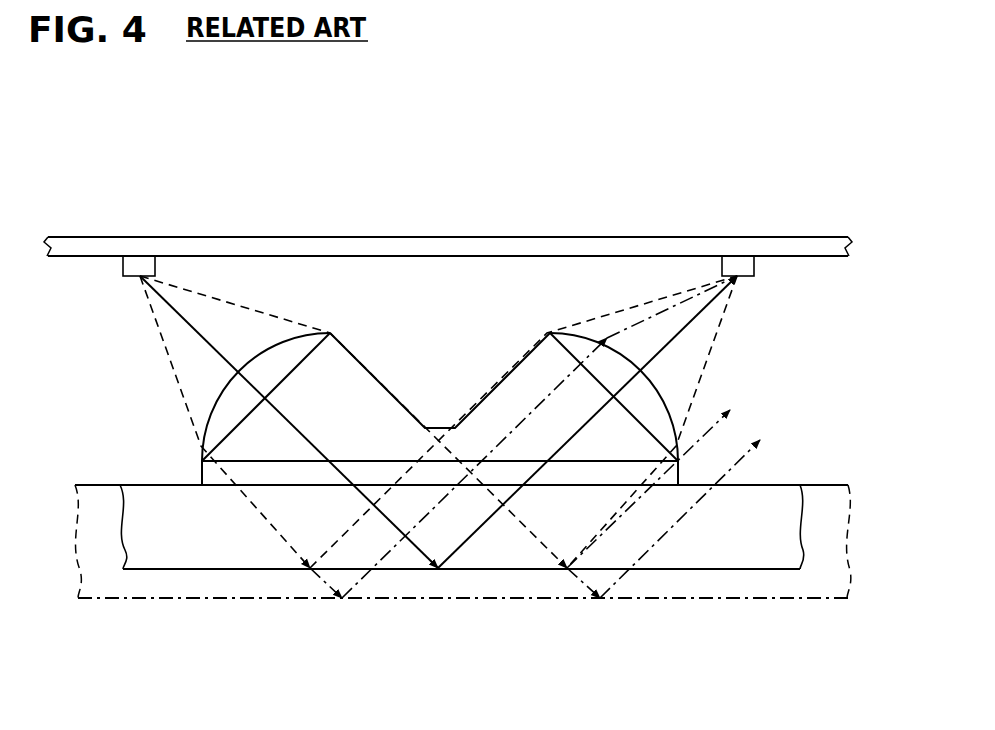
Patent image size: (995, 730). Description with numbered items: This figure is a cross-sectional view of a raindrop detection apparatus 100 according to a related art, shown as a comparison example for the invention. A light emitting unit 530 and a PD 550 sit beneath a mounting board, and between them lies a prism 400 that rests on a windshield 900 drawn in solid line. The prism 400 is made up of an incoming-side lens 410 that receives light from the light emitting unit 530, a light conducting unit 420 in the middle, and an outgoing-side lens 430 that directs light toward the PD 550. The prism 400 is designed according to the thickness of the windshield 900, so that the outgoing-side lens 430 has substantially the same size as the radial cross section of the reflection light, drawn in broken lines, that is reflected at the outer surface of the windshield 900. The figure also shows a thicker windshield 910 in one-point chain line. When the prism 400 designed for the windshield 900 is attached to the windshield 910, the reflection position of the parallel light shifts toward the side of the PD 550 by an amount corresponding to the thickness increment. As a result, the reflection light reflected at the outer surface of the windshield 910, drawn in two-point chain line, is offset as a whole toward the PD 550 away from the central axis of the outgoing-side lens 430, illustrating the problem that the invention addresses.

The raindrop detection apparatus 100 is at (203, 172).
The prism 400 is at (440, 328).
The incoming-side lens 410 is at (273, 357).
The light conducting unit 420 is at (387, 438).
The outgoing-side lens 430 is at (620, 363).
The light emitting unit 530 is at (137, 267).
The PD 550 is at (737, 267).
The windshield 900 is at (203, 545).
The windshield 910 is at (370, 587).